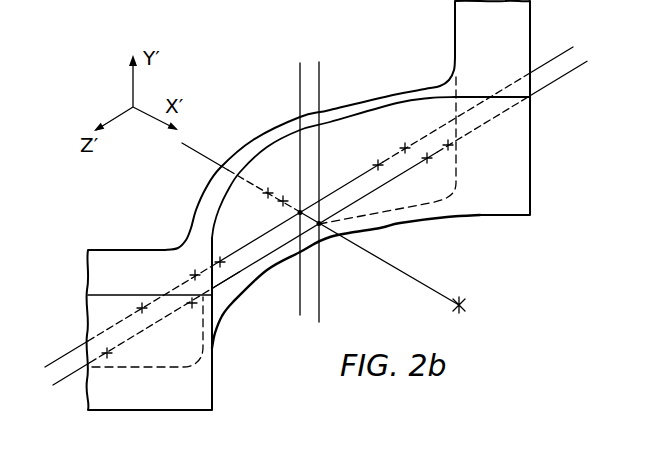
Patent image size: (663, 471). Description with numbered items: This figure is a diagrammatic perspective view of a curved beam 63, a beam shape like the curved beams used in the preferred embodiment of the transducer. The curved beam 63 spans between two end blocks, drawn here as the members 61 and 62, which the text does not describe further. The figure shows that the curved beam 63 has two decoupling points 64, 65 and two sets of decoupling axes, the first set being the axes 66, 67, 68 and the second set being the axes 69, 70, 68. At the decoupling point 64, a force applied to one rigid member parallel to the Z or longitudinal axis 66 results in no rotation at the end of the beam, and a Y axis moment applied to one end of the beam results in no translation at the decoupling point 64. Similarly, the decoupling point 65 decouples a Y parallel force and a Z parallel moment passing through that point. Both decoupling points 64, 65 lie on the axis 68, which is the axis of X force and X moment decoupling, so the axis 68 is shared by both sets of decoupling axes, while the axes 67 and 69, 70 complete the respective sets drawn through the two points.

The first end block 61 is at (181, 384).
The second end block 62 is at (514, 179).
The curved beam 63 is at (396, 88).
The decoupling point 64 is at (320, 221).
The decoupling point 65 is at (299, 211).
The Z (longitudinal) axis 66 is at (229, 287).
The decoupling axis 67 is at (319, 89).
The decoupling axis 68 is at (413, 277).
The decoupling axis 69 is at (248, 241).
The decoupling axis 70 is at (298, 97).